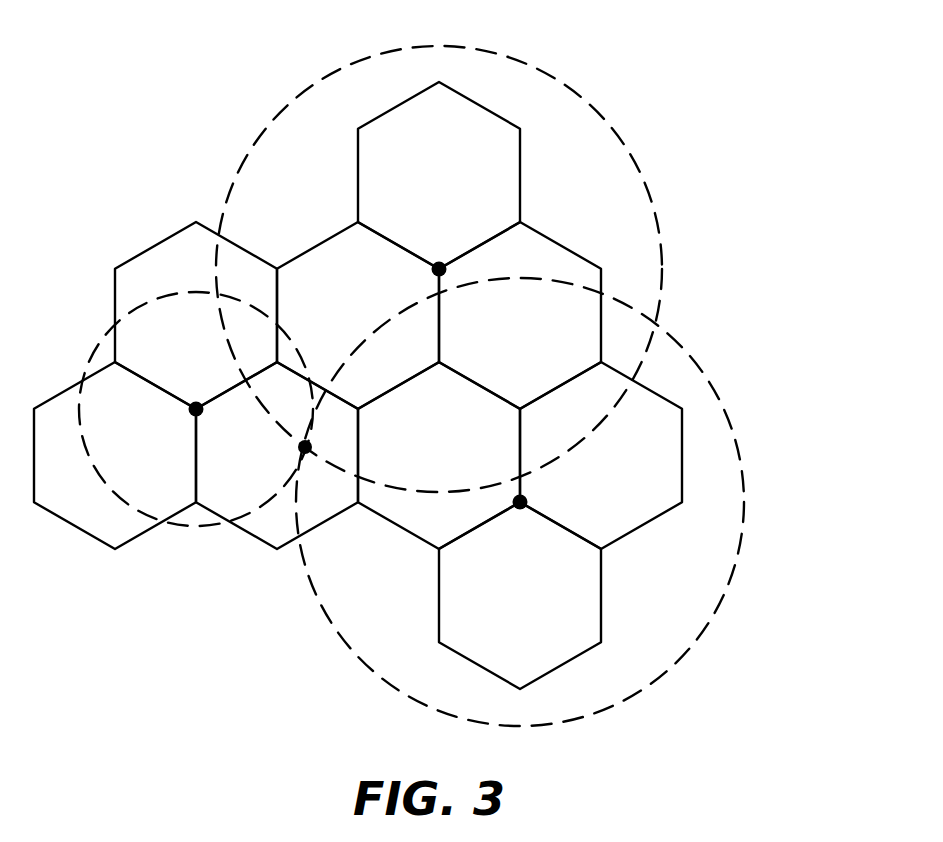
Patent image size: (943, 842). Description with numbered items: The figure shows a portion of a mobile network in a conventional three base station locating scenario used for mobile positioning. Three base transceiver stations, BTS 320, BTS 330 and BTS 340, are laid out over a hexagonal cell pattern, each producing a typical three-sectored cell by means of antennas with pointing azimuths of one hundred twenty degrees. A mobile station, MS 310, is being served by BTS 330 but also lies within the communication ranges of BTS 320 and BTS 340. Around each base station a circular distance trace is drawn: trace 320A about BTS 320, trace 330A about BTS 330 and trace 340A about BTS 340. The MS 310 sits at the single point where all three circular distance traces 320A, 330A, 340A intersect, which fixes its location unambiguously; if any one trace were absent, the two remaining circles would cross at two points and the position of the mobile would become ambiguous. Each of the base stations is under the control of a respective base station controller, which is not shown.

The MS 310 is at (300, 452).
The BTS 320 is at (439, 262).
The circular distance trace 320A is at (660, 226).
The BTS 330 is at (196, 402).
The circular distance trace 330A is at (195, 530).
The BTS 340 is at (520, 509).
The circular distance trace 340A is at (729, 584).